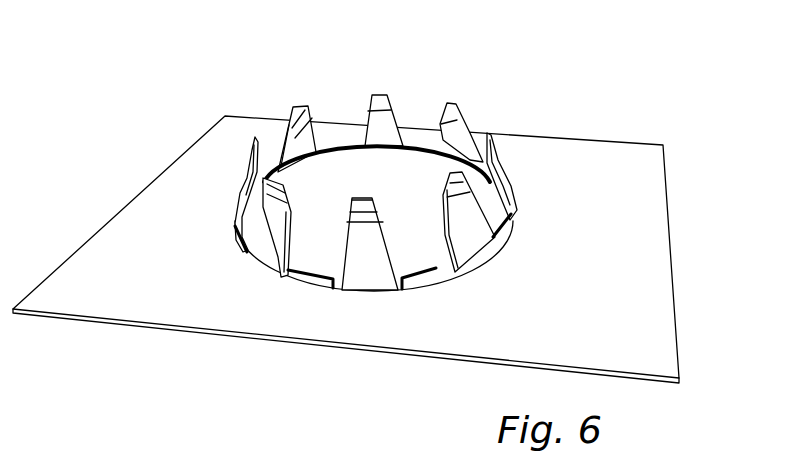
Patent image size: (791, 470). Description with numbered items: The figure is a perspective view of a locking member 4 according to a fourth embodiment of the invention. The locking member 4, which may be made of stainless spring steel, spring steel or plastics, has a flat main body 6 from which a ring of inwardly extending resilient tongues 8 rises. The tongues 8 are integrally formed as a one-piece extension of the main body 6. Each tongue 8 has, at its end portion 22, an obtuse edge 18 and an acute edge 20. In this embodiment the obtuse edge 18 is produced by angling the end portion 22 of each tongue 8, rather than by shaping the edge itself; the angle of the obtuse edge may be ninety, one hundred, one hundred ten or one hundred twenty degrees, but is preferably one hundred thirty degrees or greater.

The locking member 4 is at (229, 150).
The main body 6 is at (573, 173).
The resilient tongue 8 is at (323, 153).
The obtuse edge 18 is at (313, 124).
The acute edge 20 is at (301, 106).
The end portion 22 is at (310, 107).